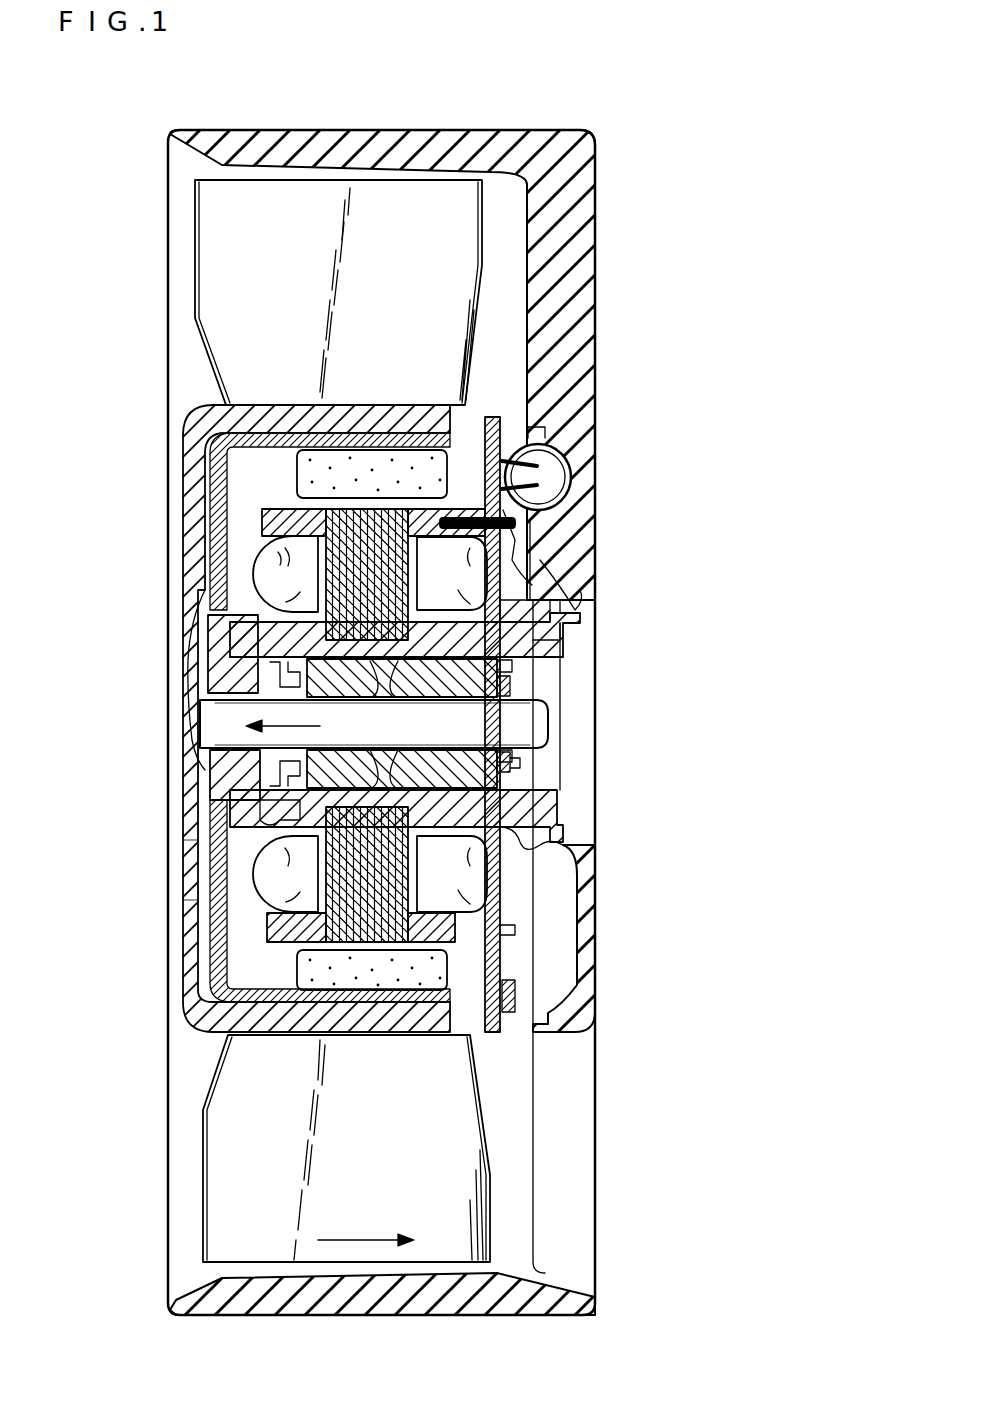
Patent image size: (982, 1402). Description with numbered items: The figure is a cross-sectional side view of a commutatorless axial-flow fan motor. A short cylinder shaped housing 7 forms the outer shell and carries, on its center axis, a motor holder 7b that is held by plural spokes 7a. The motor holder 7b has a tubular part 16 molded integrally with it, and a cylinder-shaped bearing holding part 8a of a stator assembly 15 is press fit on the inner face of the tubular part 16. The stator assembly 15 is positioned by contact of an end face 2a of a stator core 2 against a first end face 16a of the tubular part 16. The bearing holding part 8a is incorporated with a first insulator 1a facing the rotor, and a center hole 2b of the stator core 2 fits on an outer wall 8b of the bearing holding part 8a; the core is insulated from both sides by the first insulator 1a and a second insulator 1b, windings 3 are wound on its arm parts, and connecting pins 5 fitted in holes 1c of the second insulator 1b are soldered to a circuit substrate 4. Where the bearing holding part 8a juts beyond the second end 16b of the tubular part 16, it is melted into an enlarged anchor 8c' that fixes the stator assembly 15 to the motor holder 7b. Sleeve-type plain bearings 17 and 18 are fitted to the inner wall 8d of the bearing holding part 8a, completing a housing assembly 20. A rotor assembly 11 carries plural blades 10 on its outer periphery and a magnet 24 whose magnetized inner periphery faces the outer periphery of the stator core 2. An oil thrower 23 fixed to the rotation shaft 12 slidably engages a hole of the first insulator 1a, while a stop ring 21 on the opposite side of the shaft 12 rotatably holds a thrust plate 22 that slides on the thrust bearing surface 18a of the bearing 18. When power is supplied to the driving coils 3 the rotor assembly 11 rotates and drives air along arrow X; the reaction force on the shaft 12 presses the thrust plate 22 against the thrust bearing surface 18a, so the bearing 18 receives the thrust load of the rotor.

The housing 7 is at (440, 142).
The spokes 7a is at (580, 300).
The motor holder 7b is at (565, 862).
The housing assembly 20 is at (155, 176).
The blades 10 is at (215, 1168).
The rotor assembly 11 is at (178, 841).
The stator assembly 15 is at (222, 912).
The stator core 2 is at (300, 508).
The center hole 2b is at (267, 607).
The windings 3 is at (262, 556).
The first insulator 1a is at (287, 630).
The tubular part 16 is at (545, 602).
The first end face 16a is at (545, 572).
The second end 16b is at (555, 640).
The anchor 8c' is at (610, 634).
The bearing holding part 8a is at (505, 658).
The outer wall 8b is at (540, 720).
The inner wall 8d is at (530, 802).
The thrust plate 22 is at (515, 688).
The stop ring 21 is at (520, 756).
The sleeve-type plain bearing 18 is at (520, 784).
The thrust bearing surface 18a is at (515, 795).
The rotation shaft 12 is at (215, 712).
The sleeve-type plain bearing 17 is at (200, 660).
The oil thrower 23 is at (250, 768).
The end face 2a is at (300, 820).
The circuit substrate 4 is at (545, 432).
The second insulator 1b is at (570, 482).
The connecting pins 5 is at (525, 522).
The holes 1c is at (530, 560).
The magnet 24 is at (435, 972).